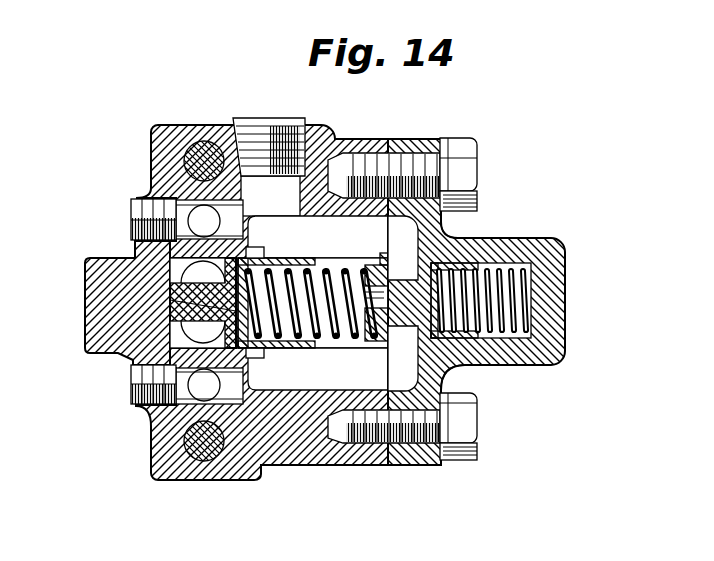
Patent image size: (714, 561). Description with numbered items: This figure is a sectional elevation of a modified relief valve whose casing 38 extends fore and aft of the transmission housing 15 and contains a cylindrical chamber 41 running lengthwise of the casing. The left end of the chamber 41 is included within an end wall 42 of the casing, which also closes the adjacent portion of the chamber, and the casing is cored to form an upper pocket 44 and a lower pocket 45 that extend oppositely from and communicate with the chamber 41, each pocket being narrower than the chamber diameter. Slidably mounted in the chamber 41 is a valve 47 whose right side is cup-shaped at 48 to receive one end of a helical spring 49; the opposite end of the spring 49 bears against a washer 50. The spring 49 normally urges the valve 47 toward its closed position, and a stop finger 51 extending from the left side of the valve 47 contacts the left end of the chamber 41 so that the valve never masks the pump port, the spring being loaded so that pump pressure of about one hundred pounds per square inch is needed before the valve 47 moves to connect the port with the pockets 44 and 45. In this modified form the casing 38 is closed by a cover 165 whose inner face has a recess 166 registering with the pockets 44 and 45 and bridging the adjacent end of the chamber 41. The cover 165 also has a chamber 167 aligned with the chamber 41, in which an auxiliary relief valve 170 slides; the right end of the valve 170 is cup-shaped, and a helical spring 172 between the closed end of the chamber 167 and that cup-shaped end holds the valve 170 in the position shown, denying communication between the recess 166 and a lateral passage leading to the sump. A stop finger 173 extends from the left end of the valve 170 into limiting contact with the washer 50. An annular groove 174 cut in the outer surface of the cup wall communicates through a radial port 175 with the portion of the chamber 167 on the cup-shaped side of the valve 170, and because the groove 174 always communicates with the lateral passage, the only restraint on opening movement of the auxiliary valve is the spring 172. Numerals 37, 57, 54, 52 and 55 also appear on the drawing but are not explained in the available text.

The transmission housing 15 is at (264, 94).
The bolt 37 is at (187, 133).
The end wall 42 is at (145, 147).
The casing 38 is at (347, 130).
The stop finger 51 is at (148, 250).
The valve 47 is at (165, 291).
The cylindrical chamber 41 is at (130, 326).
The retaining ring 57 is at (127, 349).
The plate 54 is at (236, 200).
The ring 52 is at (256, 245).
The upper pocket 44 is at (338, 263).
The helical spring 49 is at (374, 246).
The ring 55 is at (254, 349).
The cup-shaped portion 48 is at (344, 333).
The lower pocket 45 is at (305, 352).
The washer 50 is at (378, 340).
The stop finger 173 is at (395, 316).
The recess 166 is at (425, 222).
The radial port 175 is at (402, 232).
The cover 165 is at (520, 230).
The chamber 167 is at (513, 258).
The helical spring 172 is at (518, 270).
The auxiliary relief valve 170 is at (525, 327).
The annular groove 174 is at (458, 363).